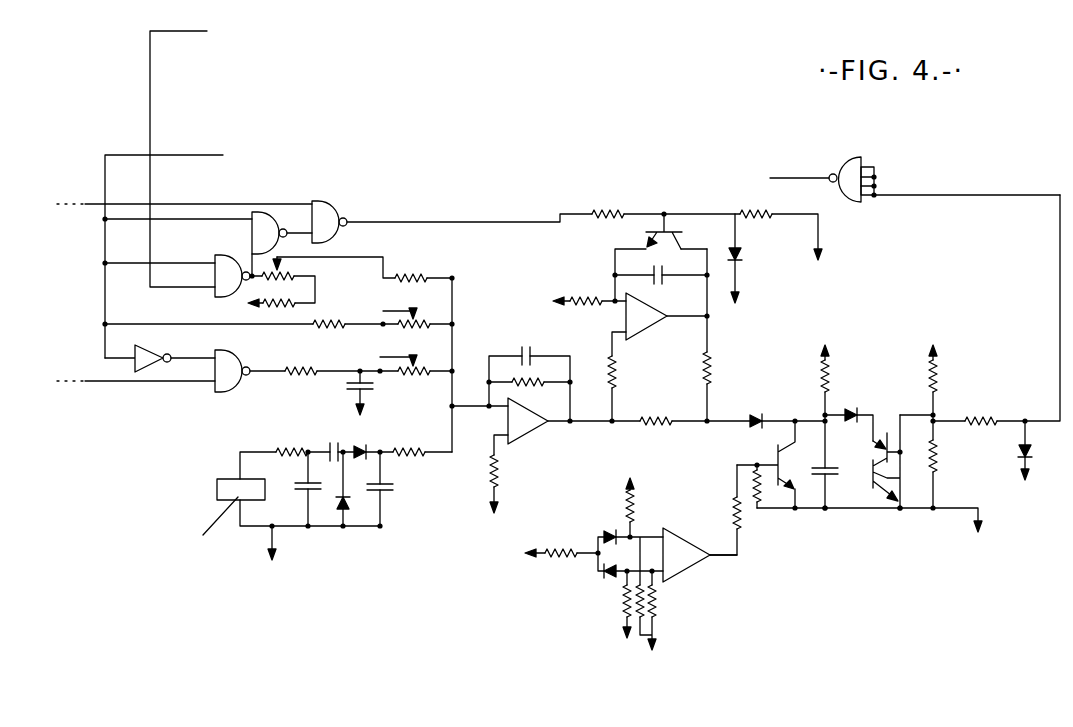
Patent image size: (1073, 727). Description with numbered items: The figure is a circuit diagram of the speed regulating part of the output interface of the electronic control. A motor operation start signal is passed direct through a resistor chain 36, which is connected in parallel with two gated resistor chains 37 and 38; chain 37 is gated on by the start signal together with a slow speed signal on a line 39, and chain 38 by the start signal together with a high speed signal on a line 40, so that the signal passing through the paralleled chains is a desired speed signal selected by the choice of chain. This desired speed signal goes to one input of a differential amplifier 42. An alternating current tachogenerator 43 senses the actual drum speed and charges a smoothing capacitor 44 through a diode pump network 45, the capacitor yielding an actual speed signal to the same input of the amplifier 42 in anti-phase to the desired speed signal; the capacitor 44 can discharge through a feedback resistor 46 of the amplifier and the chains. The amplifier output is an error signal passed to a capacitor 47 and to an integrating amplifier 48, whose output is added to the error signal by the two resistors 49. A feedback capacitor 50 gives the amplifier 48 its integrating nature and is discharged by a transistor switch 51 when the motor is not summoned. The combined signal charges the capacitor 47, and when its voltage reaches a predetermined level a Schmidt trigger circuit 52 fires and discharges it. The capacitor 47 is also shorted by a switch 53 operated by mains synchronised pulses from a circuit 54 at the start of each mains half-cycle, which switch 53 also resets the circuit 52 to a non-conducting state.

The resistor chain 36 is at (352, 322).
The gated resistor chain 37 is at (385, 268).
The gated resistor chain 38 is at (262, 370).
The line 39 is at (151, 100).
The line 40 is at (125, 382).
The differential amplifier 42 is at (543, 426).
The alternating current tachogenerator 43 is at (216, 490).
The smoothing capacitor 44 is at (385, 478).
The diode pump network 45 is at (358, 510).
The feedback resistor 46 is at (516, 373).
The capacitor 47 is at (832, 461).
The integrating amplifier 48 is at (642, 333).
The resistors 49 is at (652, 428).
The feedback capacitor 50 is at (668, 276).
The transistor switch 51 is at (672, 214).
The Schmidt trigger circuit 52 is at (897, 472).
The switch 53 is at (790, 488).
The circuit 54 is at (690, 580).